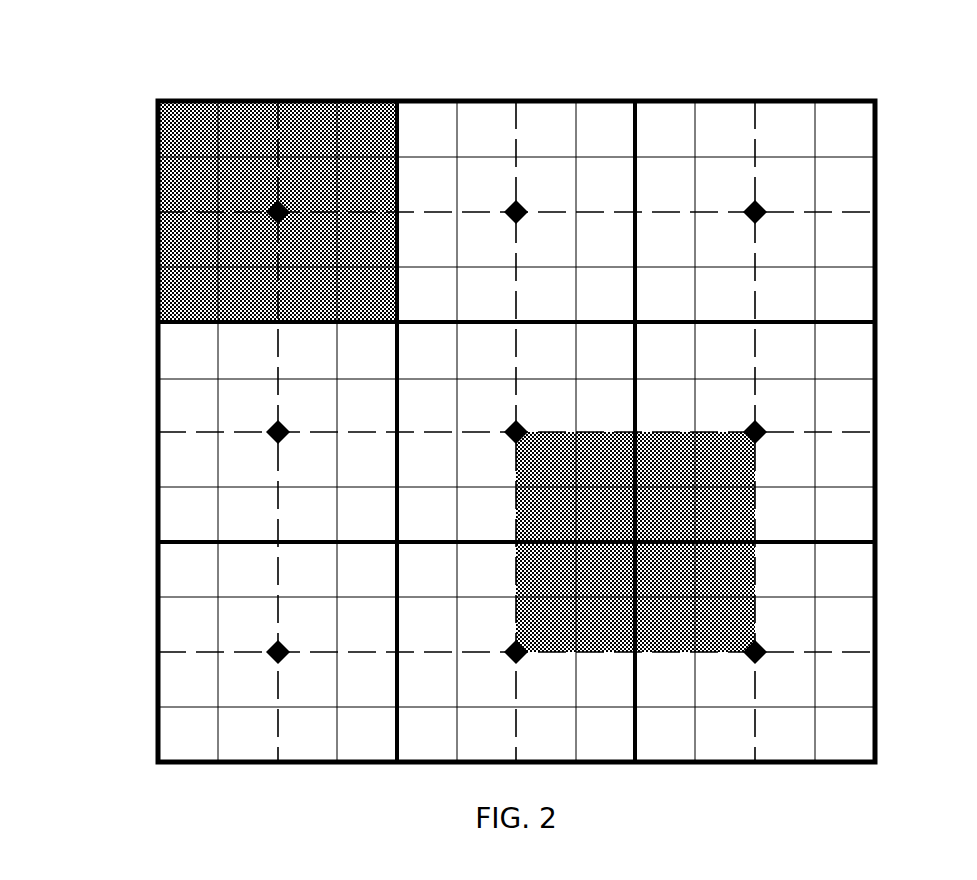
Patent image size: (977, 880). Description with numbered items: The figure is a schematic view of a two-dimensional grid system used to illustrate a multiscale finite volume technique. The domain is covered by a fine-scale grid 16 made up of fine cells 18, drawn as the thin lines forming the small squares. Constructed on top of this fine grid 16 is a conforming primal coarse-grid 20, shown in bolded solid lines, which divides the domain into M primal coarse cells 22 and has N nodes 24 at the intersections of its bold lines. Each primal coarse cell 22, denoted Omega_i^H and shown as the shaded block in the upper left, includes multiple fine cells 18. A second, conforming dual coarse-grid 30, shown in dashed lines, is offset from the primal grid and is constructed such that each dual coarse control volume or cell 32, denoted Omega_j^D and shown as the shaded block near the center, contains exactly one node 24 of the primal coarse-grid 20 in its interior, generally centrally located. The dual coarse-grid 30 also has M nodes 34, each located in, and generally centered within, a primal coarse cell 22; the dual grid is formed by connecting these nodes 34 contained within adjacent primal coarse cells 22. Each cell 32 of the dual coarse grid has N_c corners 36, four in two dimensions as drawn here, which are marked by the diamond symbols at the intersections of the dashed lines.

The fine-scale grid 16 is at (731, 150).
The fine cell 18 is at (607, 112).
The primal coarse-grid 20 is at (834, 316).
The primal coarse cell 22 is at (157, 195).
The node 24 is at (397, 323).
The dual coarse-grid 30 is at (758, 717).
The dual coarse cell 32 is at (757, 460).
The dual coarse node 34 is at (278, 212).
The corner 36 is at (516, 432).